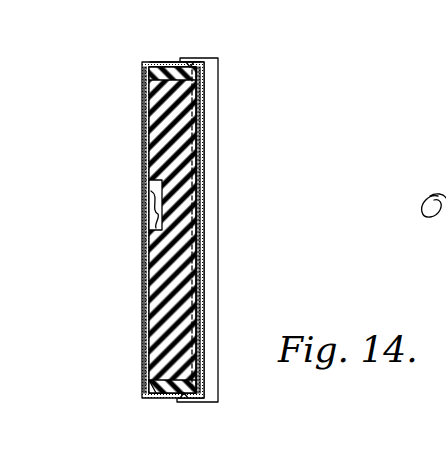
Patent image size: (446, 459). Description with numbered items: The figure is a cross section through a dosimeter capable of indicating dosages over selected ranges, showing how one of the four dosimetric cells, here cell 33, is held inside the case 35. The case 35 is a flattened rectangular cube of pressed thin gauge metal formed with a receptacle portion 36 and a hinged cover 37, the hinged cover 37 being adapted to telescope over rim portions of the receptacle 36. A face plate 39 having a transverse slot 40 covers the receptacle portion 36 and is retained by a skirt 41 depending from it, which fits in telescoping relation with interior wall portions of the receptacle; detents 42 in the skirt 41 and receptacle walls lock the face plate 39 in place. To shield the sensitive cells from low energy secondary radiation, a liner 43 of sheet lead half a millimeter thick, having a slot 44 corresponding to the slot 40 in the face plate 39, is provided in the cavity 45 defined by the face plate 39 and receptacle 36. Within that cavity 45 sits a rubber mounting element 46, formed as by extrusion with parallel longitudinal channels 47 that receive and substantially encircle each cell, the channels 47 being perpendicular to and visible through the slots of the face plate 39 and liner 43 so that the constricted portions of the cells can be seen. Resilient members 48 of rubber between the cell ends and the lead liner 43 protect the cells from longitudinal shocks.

The dosimetric cell 33 is at (143, 312).
The case 35 is at (120, 350).
The receptacle portion 36 is at (152, 61).
The hinged cover 37 is at (217, 230).
The face plate 39 is at (145, 85).
The transverse slot 40 is at (150, 191).
The skirt 41 is at (167, 62).
The detents 42 is at (192, 60).
The liner 43 is at (198, 128).
The slot 44 is at (152, 216).
The cavity 45 is at (147, 378).
The rubber mounting element 46 is at (183, 297).
The longitudinal channels 47 is at (200, 185).
The resilient members 48 is at (203, 70).